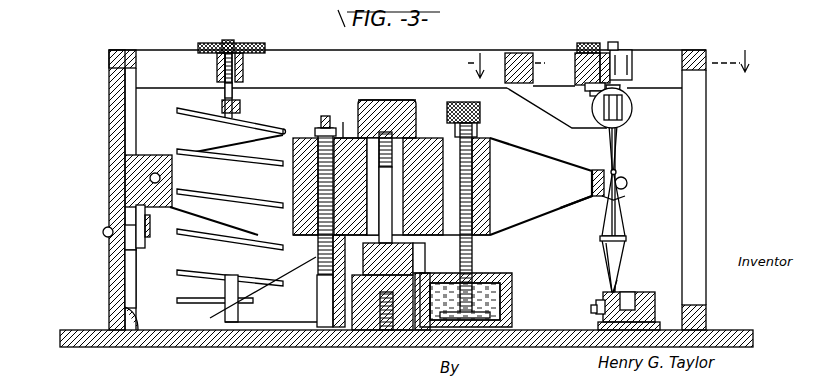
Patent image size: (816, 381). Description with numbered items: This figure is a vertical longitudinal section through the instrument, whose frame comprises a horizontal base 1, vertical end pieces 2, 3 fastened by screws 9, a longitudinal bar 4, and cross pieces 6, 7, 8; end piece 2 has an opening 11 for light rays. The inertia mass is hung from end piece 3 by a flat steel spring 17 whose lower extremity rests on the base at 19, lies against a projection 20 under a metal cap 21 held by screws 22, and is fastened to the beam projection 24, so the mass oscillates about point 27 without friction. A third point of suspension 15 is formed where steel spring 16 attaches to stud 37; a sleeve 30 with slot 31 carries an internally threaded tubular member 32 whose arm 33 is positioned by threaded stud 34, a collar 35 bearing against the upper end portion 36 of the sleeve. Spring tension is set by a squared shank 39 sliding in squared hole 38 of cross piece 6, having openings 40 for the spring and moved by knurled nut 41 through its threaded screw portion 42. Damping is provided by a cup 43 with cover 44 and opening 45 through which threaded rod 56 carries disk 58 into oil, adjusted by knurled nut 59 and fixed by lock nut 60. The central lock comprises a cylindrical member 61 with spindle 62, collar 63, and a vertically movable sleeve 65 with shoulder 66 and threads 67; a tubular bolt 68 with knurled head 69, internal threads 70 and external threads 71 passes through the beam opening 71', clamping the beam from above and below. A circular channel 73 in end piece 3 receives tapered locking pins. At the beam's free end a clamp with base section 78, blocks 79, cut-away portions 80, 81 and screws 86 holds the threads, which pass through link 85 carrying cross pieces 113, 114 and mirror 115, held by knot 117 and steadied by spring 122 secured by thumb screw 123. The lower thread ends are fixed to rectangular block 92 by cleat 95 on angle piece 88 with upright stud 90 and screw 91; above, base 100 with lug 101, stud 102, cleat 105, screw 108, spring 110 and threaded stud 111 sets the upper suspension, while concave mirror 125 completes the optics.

The horizontal base 1 is at (68, 285).
The end piece 2 is at (694, 50).
The end piece 3 is at (110, 130).
The longitudinally disposed bar 4 is at (166, 50).
The cross piece 6 is at (243, 63).
The cross piece 7 is at (515, 53).
The cross piece 8 is at (572, 58).
The screws 9 is at (125, 330).
The opening 11 is at (698, 126).
The third point of suspension 15 is at (215, 312).
The steel spring 16 is at (185, 250).
The flat steel spring 17 is at (128, 262).
The lower extremity of spring 19 is at (140, 325).
The projection 20 is at (125, 240).
The metal cap 21 is at (142, 228).
The screws 22 is at (105, 230).
The projection 24 is at (178, 152).
The point 27 is at (230, 178).
The sleeve 30 is at (346, 118).
The slot 31 is at (318, 248).
The tubular member 32 is at (318, 262).
The arm 33 is at (280, 310).
The threaded stud 34 is at (300, 178).
The collar 35 is at (318, 134).
The upper end portion of sleeve 36 is at (325, 116).
The stud 37 is at (218, 286).
The squared hole 38 is at (217, 66).
The squared shank 39 is at (240, 82).
The openings 40 is at (240, 108).
The knurled nut 41 is at (252, 43).
The threaded screw portion 42 is at (228, 40).
The cup 43 is at (505, 300).
The cover 44 is at (488, 268).
The opening 45 is at (475, 262).
The threaded rod 56 is at (495, 185).
The disk 58 is at (505, 315).
The knurled nut 59 is at (480, 112).
The lock nut 60 is at (478, 130).
The cylindrical member 61 is at (360, 328).
The spindle 62 is at (478, 205).
The collar 63 is at (402, 335).
The sleeve 65 is at (431, 291).
The shoulder / horizontally disposed portion 66 is at (333, 275).
The threads 67 is at (429, 255).
The tubular bolt 68 is at (300, 200).
The knurled head 69 is at (362, 100).
The internal threads 70 is at (395, 100).
The external threads 71 is at (388, 203).
The opening in the beam 71' is at (423, 172).
The circular channel 73 is at (150, 178).
The base section 78 is at (592, 180).
The blocks 79 is at (620, 176).
The shouldered cut-away portion 80 is at (622, 170).
The shouldered cut-away portion 81 is at (622, 200).
The link 85 is at (592, 200).
The screws 86 is at (628, 183).
The L-shaped angle piece 88 is at (598, 322).
The upright stud 90 is at (652, 300).
The screw 91 is at (636, 290).
The rectangular block 92 is at (630, 292).
The cleat 95 is at (602, 300).
The base of thread clamp 100 is at (618, 45).
The semi-cylindrical lug 101 is at (575, 66).
The stud 102 is at (632, 62).
The cleat 105 is at (612, 78).
The screw 108 is at (588, 43).
The steel spring 110 is at (592, 96).
The threaded stud 111 is at (585, 88).
The cross piece 113 is at (606, 218).
The cross piece 114 is at (575, 128).
The mirror 115 is at (620, 112).
The knot 117 is at (626, 240).
The spring 122 is at (605, 240).
The thumb screw 123 is at (591, 308).
The concave mirror 125 is at (628, 102).